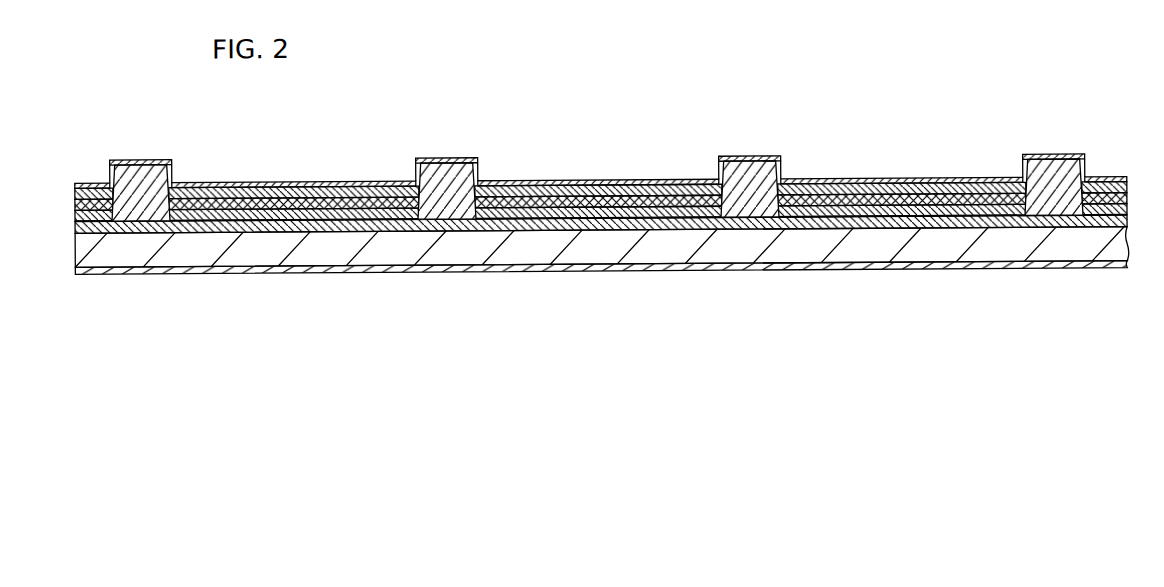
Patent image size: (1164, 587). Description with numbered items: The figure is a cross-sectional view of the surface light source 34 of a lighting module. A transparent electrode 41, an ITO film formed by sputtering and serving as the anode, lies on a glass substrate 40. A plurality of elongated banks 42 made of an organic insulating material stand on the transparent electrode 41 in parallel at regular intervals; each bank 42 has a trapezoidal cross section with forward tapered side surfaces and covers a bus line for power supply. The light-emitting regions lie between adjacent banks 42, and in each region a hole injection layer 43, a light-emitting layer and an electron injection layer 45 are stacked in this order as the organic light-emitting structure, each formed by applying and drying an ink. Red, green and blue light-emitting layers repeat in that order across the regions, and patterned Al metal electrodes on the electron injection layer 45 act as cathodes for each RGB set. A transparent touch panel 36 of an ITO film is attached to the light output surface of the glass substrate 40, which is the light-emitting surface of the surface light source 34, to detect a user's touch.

The surface light source 34 is at (730, 123).
The transparent touch panel 36 is at (797, 271).
The glass substrate 40 is at (477, 250).
The transparent electrode 41 is at (337, 226).
The bank 42 is at (143, 200).
The hole injection layer 43 is at (302, 218).
The electron injection layer 45 is at (201, 192).